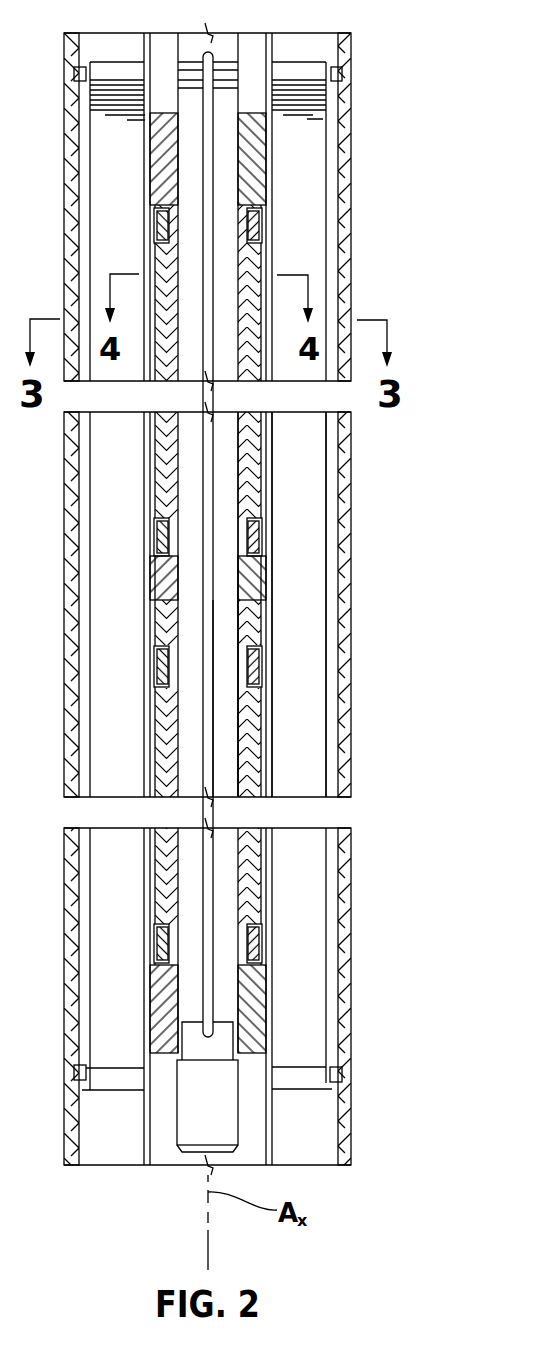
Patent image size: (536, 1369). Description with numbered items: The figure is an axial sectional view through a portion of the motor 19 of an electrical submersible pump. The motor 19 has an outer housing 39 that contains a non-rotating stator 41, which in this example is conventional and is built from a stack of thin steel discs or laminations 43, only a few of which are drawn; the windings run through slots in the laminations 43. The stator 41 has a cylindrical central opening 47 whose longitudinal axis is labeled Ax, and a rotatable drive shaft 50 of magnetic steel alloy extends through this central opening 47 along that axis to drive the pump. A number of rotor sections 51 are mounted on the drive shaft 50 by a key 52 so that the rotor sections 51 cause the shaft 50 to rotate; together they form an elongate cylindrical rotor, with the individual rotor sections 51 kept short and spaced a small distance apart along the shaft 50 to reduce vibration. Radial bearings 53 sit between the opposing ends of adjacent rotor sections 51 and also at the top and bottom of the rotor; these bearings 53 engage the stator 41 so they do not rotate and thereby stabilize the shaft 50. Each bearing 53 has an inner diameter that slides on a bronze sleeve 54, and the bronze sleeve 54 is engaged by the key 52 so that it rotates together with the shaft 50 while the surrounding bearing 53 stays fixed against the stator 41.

The motor 19 is at (290, 632).
The housing 39 is at (347, 190).
The stator 41 is at (308, 578).
The laminations 43 is at (302, 80).
The central opening 47 is at (258, 471).
The drive shaft 50 is at (223, 732).
The rotor sections 51 is at (222, 631).
The key 52 is at (207, 591).
The radial bearings 53 is at (150, 575).
The bronze sleeve 54 is at (242, 975).